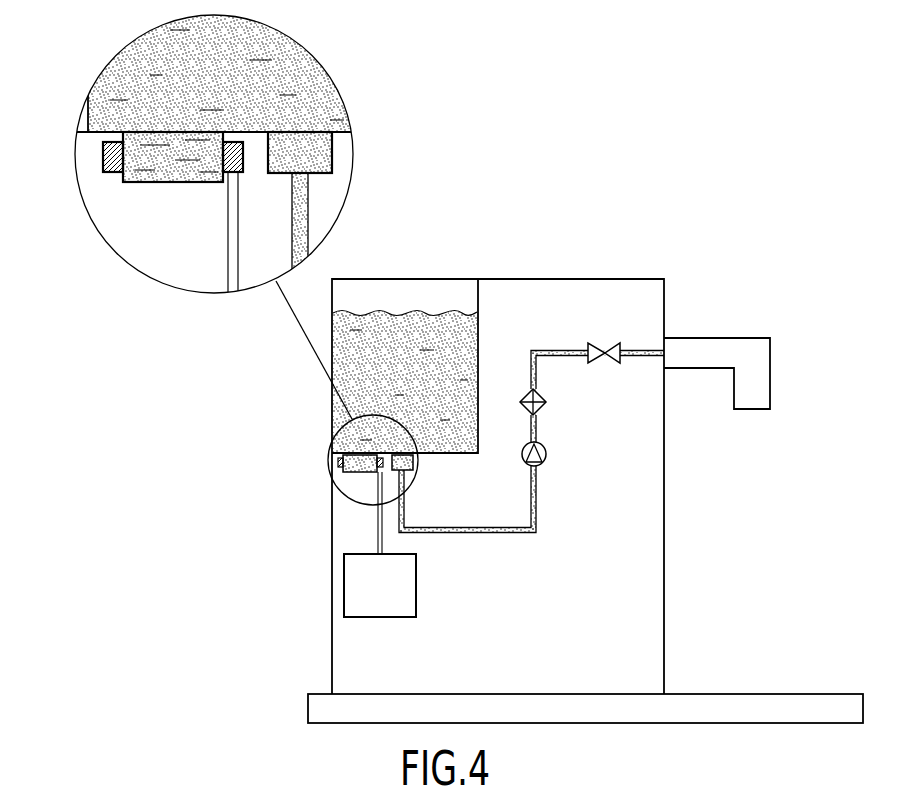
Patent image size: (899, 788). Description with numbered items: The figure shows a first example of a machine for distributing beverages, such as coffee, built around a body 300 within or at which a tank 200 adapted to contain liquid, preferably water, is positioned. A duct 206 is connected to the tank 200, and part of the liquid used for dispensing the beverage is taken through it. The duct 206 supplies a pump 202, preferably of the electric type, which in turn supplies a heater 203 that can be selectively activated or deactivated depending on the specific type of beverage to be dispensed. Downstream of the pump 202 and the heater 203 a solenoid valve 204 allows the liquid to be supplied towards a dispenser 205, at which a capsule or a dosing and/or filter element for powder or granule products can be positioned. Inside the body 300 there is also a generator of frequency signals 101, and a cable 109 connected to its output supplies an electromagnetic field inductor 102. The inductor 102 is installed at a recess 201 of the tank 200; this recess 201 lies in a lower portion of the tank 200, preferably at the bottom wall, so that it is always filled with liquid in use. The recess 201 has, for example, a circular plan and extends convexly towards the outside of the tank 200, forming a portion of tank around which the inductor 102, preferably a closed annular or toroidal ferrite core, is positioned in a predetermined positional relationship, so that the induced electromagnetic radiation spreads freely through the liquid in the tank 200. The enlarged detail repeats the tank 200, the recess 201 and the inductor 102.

The body 300 is at (535, 270).
The tank 200 is at (422, 387).
The recess 201 is at (357, 457).
The electromagnetic field inductor 102 is at (338, 461).
The duct 206 is at (512, 535).
The pump 202 is at (548, 447).
The heater 203 is at (527, 391).
The solenoid valve 204 is at (607, 348).
The dispenser 205 is at (755, 322).
The generator of frequency signals 101 is at (400, 599).
The cable 109 is at (377, 523).